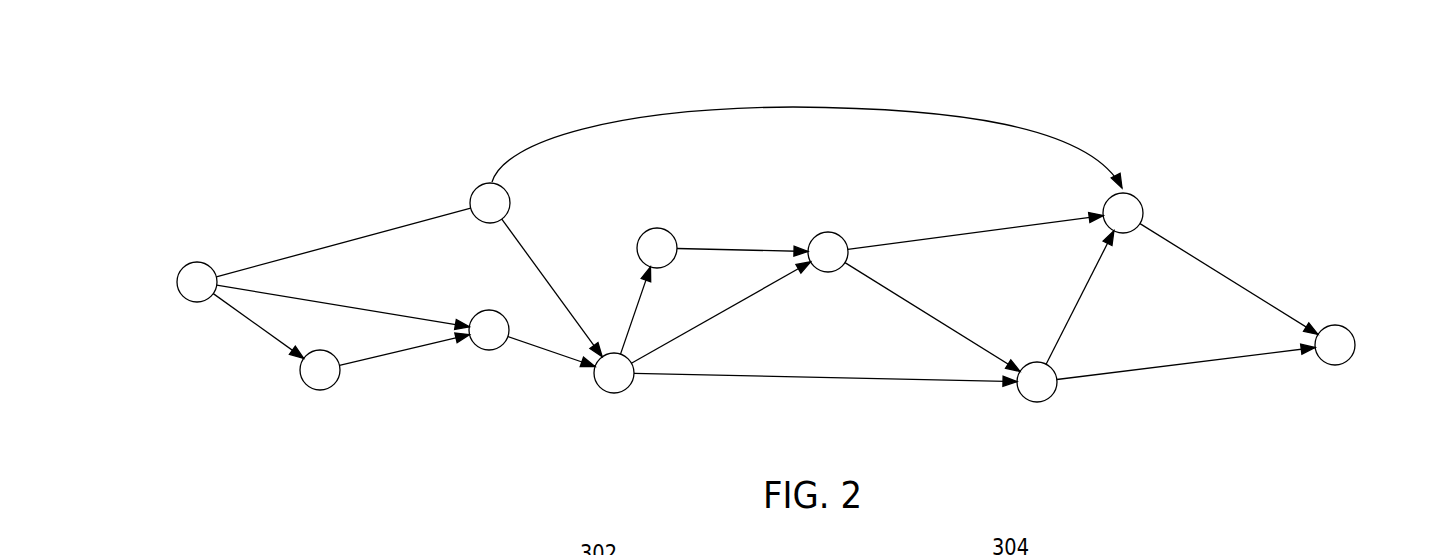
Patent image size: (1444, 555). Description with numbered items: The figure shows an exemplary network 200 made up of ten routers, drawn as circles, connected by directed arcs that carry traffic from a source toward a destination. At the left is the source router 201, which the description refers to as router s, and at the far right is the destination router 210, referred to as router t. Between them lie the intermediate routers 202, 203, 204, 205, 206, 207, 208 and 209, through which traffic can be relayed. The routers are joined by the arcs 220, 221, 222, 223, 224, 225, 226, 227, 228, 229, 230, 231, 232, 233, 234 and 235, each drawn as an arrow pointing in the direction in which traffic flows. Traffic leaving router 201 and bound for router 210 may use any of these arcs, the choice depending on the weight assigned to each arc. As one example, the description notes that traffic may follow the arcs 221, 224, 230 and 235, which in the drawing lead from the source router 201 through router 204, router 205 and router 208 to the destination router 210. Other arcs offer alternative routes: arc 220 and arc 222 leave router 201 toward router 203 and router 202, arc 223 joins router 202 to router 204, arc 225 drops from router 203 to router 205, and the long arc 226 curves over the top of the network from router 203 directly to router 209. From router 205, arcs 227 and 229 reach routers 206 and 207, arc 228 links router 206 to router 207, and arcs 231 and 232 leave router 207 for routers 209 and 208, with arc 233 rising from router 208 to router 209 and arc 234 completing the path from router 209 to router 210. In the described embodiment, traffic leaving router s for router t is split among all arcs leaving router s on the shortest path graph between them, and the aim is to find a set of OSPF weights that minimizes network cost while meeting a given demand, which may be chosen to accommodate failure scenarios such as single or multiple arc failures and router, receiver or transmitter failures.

The network 200 is at (262, 80).
The source router 201 is at (180, 293).
The router 202 is at (303, 386).
The router 203 is at (473, 188).
The router 204 is at (478, 349).
The router 205 is at (617, 393).
The router 206 is at (660, 228).
The router 207 is at (831, 232).
The router 208 is at (1037, 403).
The router 209 is at (1142, 198).
The destination router 210 is at (1351, 325).
The arc 220 is at (350, 241).
The arc 221 is at (382, 310).
The arc 222 is at (263, 327).
The arc 223 is at (402, 355).
The arc 224 is at (548, 354).
The arc 225 is at (547, 254).
The arc 226 is at (718, 108).
The arc 227 is at (635, 309).
The arc 228 is at (731, 248).
The arc 229 is at (708, 322).
The arc 230 is at (783, 376).
The arc 231 is at (949, 237).
The arc 232 is at (956, 312).
The arc 233 is at (1078, 295).
The arc 234 is at (1257, 275).
The arc 235 is at (1187, 367).